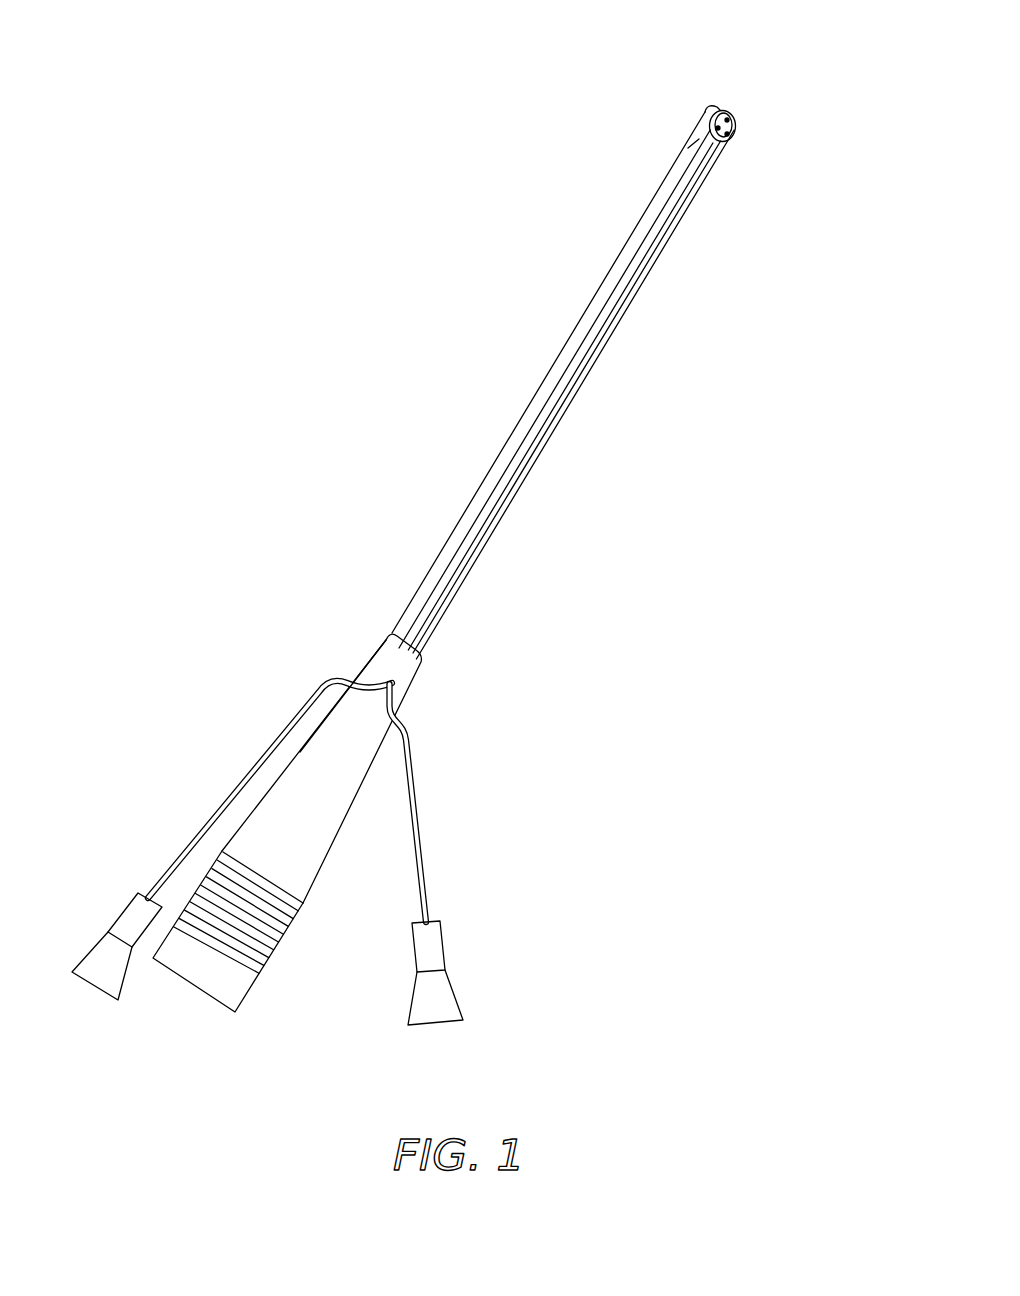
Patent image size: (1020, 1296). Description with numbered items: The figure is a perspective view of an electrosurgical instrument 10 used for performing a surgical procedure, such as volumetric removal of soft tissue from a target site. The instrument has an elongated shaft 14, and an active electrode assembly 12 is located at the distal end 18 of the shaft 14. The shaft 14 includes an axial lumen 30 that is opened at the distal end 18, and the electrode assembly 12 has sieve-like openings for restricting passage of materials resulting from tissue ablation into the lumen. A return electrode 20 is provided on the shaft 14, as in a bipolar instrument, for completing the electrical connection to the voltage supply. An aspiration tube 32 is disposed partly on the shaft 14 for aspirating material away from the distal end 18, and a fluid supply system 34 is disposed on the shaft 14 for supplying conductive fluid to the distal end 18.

The electrosurgical instrument 10 is at (464, 515).
The active electrode assembly 12 is at (752, 115).
The shaft 14 is at (624, 313).
The distal end 18 is at (690, 100).
The return electrode 20 is at (706, 117).
The axial lumen 30 is at (498, 490).
The aspiration tube 32 is at (203, 828).
The fluid supply system 34 is at (423, 850).